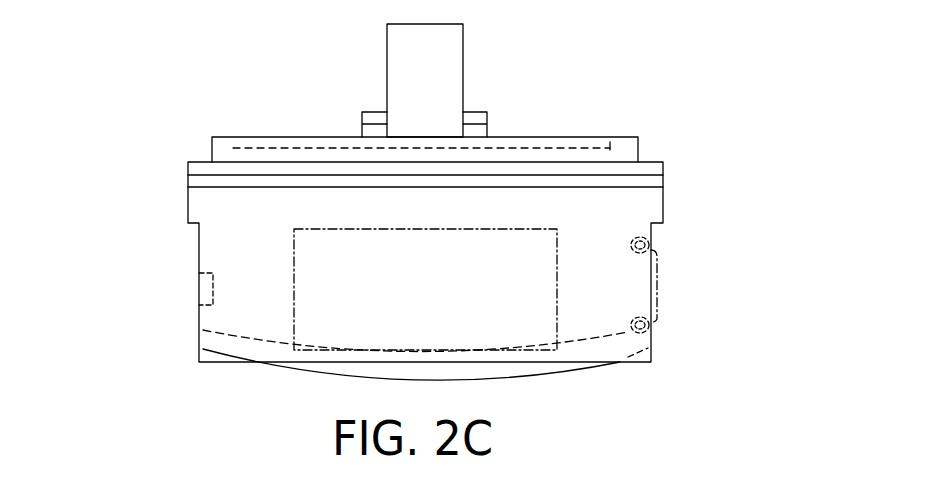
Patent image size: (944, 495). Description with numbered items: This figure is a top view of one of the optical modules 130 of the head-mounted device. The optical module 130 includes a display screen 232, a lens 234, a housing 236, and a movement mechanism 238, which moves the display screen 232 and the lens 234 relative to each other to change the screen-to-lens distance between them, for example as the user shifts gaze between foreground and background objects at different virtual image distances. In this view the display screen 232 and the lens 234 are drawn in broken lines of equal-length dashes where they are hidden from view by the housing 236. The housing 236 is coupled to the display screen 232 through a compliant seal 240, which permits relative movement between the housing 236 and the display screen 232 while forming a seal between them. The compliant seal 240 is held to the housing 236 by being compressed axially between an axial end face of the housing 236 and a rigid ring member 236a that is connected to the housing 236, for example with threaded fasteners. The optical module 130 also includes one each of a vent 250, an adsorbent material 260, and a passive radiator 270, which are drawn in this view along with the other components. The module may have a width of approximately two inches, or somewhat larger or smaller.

The optical module 130 is at (645, 51).
The display screen 232 is at (578, 148).
The lens 234 is at (210, 330).
The housing 236 is at (188, 190).
The rigid ring member 236a is at (515, 163).
The movement mechanism 238 is at (387, 54).
The compliant seal 240 is at (228, 163).
The vent 250 is at (207, 273).
The adsorbent material 260 is at (294, 240).
The passive radiator 270 is at (657, 278).